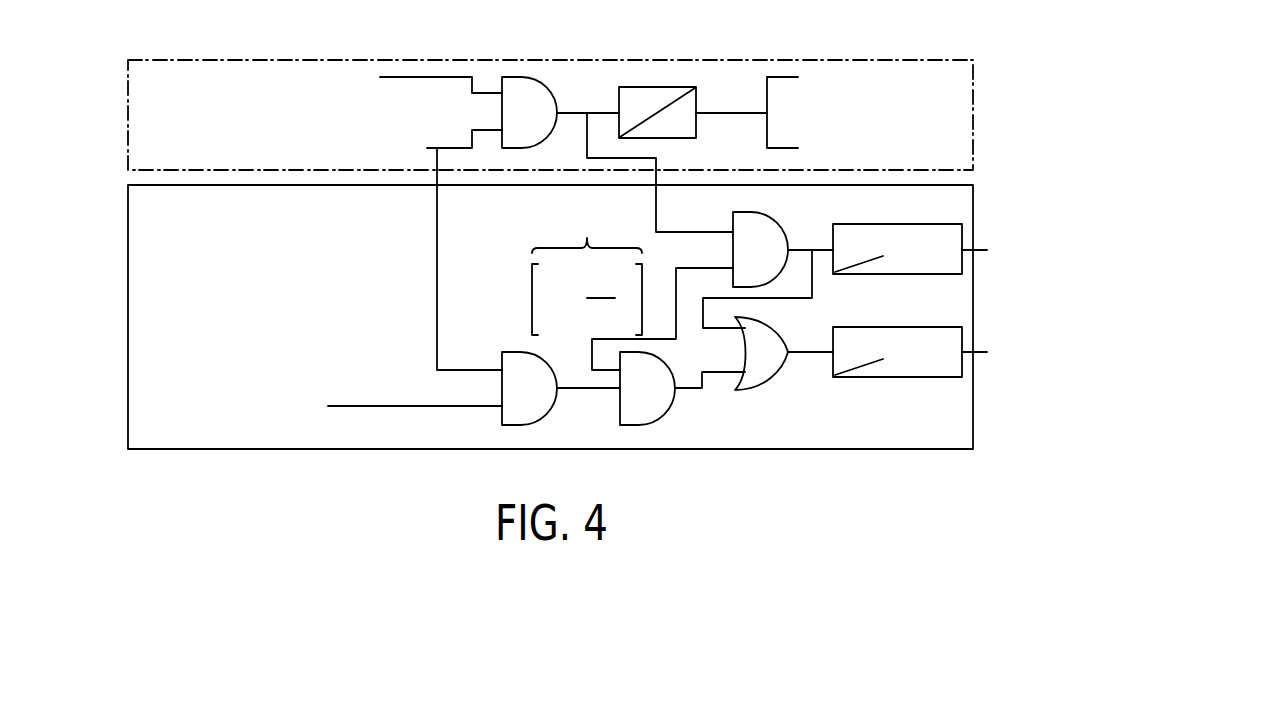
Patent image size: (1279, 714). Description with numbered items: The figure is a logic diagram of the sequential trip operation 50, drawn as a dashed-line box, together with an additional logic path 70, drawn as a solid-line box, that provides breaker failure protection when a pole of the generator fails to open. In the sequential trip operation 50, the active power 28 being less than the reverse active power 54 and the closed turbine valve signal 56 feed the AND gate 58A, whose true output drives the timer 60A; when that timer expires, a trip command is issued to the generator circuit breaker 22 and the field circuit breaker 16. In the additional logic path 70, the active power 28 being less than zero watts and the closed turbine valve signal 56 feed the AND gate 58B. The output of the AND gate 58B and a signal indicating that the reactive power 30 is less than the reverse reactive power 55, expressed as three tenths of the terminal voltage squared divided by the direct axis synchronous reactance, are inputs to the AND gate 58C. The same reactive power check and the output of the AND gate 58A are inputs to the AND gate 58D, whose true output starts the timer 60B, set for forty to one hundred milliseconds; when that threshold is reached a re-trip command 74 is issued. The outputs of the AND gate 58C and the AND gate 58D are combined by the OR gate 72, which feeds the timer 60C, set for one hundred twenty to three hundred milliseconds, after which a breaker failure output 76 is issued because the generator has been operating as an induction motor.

The sequential trip operation 50 is at (106, 113).
The additional logic path 70 is at (118, 330).
The active power 28 is at (245, 78).
The reverse active power 54 is at (315, 97).
The closed turbine valve signal 56 is at (128, 148).
The AND gate 58A is at (548, 88).
The timer 60A is at (660, 88).
The generator circuit breaker 22 is at (925, 78).
The field circuit breaker 16 is at (920, 152).
The reverse reactive power 55 is at (545, 215).
The reactive power 30 is at (480, 278).
The AND gate 58B is at (515, 352).
The AND gate 58C is at (675, 415).
The AND gate 58D is at (772, 230).
The OR gate 72 is at (782, 380).
The timer 60B is at (965, 240).
The timer 60C is at (930, 325).
The re-trip command 74 is at (1085, 248).
The breaker failure output 76 is at (1210, 333).